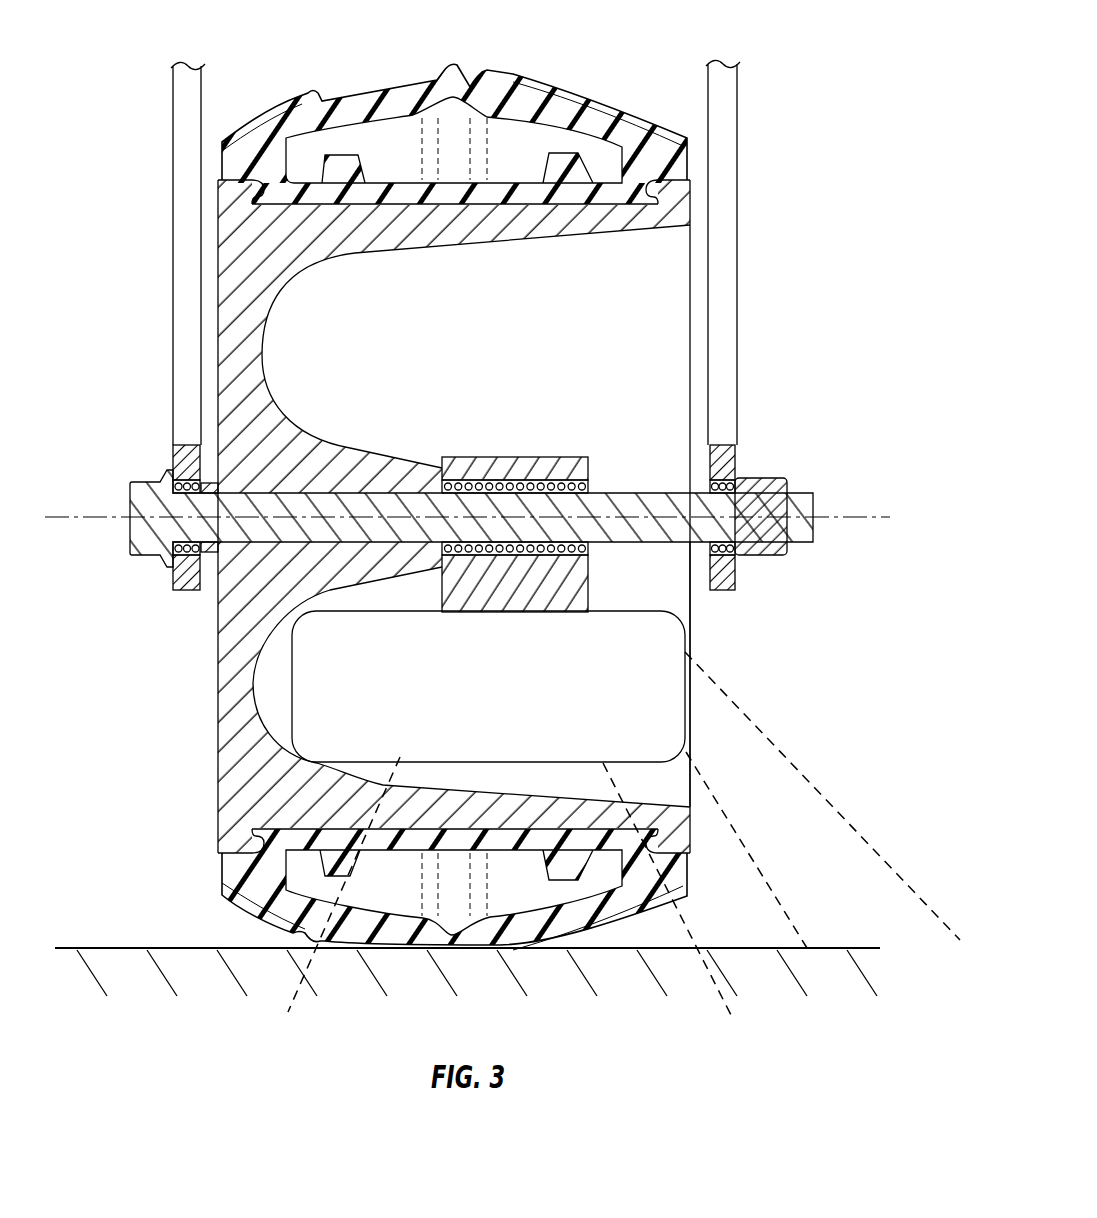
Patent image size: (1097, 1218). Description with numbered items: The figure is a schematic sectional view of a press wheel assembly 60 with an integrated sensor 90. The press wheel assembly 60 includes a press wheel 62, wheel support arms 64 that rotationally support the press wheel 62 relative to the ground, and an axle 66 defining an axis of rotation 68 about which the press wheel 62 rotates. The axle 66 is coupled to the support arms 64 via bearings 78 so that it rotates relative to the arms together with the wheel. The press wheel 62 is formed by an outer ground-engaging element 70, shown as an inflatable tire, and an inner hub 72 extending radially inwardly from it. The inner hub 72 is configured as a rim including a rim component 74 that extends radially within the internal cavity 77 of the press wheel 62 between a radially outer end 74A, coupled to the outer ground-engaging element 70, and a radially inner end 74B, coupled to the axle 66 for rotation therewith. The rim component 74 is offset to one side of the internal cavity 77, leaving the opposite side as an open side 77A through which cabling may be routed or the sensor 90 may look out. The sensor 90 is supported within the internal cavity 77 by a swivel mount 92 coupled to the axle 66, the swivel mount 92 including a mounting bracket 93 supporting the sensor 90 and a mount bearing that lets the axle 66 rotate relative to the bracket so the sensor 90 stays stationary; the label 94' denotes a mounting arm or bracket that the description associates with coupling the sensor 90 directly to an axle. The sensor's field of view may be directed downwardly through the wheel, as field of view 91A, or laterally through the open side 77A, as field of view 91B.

The press wheel assembly 60 is at (798, 106).
The press wheel 62 is at (454, 479).
The wheel support arms 64 is at (178, 331).
The axle 66 is at (140, 500).
The axis of rotation 68 is at (843, 518).
The outer ground-engaging element 70 is at (570, 108).
The inner hub 72 is at (478, 479).
The rim component 74 is at (390, 516).
The radially outer end 74A is at (258, 227).
The radially inner end 74B is at (220, 590).
The internal cavity 77 is at (458, 369).
The open side 77A is at (753, 633).
The bearings 78 is at (737, 485).
The sensor 90 is at (476, 702).
The field of view 91A is at (290, 998).
The field of view 91B is at (828, 800).
The swivel mount 92 is at (559, 433).
The mounting bracket 93 is at (557, 580).
The mounting arm or bracket 94' is at (559, 470).